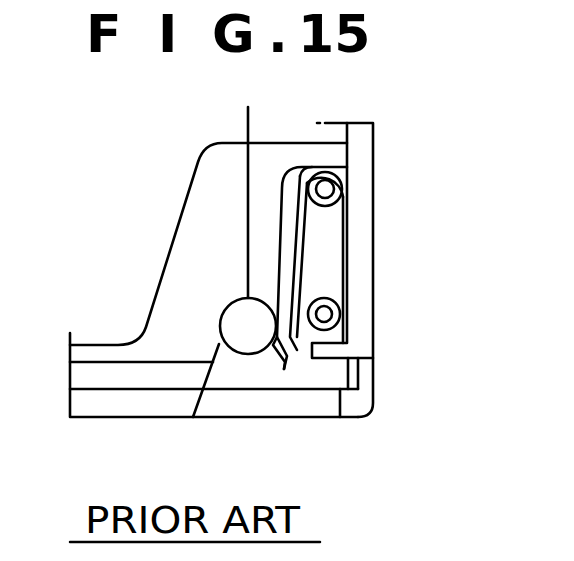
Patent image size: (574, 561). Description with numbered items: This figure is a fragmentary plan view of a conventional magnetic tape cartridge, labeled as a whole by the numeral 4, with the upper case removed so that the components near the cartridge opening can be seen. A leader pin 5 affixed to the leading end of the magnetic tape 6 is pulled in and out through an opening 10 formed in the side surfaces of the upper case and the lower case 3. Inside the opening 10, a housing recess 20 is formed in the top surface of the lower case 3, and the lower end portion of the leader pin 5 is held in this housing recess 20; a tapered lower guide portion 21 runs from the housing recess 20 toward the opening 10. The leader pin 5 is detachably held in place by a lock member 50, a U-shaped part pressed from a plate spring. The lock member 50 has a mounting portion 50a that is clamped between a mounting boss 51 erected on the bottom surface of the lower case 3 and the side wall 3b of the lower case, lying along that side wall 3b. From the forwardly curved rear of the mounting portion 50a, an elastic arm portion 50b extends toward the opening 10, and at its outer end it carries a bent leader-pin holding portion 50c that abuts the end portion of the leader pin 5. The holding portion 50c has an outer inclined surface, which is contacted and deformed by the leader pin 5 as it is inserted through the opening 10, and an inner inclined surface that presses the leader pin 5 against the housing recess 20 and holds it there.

The lower case 3 is at (375, 138).
The side wall 3b is at (368, 218).
The door lock assembly 4 is at (98, 139).
The leader pin 5 is at (233, 298).
The magnetic tape 6 is at (248, 122).
The opening 10 is at (168, 372).
The housing recess 20 is at (222, 323).
The lower guide portion 21 is at (240, 401).
The lock member 50 is at (294, 228).
The mounting portion 50a is at (347, 257).
The elastic arm portion 50b is at (298, 272).
The leader-pin holding portion 50c is at (274, 372).
The mounting boss 51 is at (327, 190).